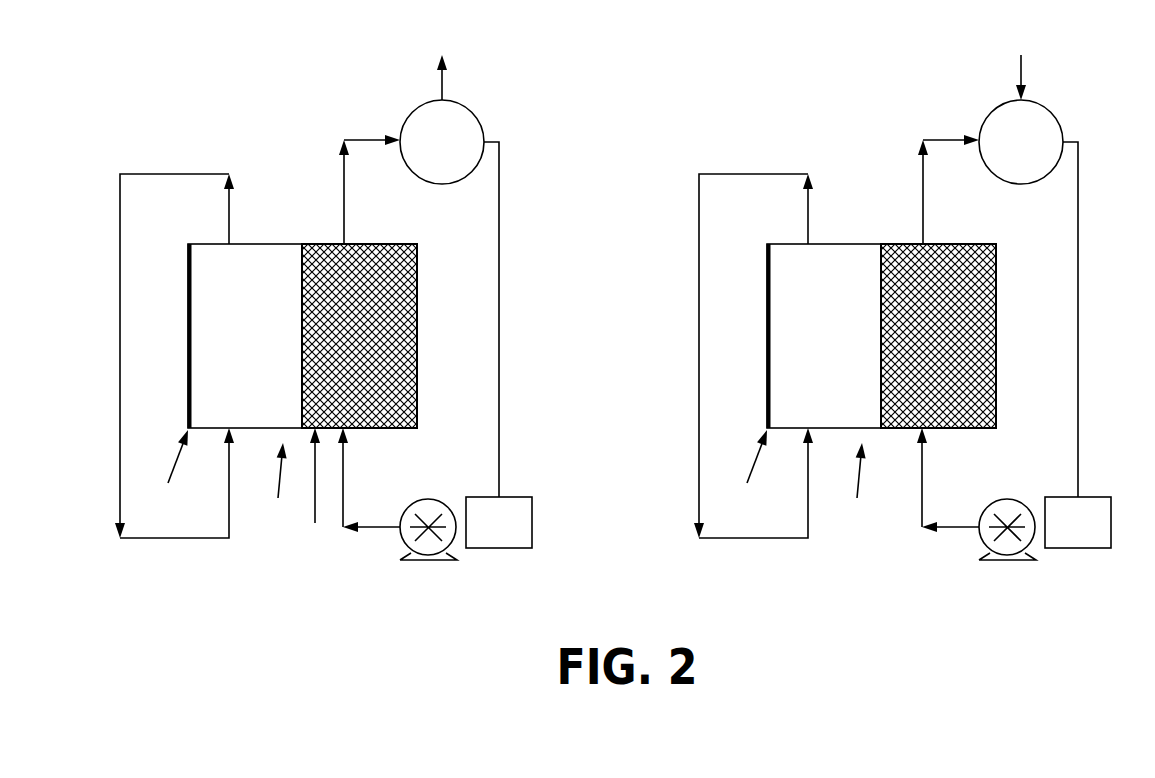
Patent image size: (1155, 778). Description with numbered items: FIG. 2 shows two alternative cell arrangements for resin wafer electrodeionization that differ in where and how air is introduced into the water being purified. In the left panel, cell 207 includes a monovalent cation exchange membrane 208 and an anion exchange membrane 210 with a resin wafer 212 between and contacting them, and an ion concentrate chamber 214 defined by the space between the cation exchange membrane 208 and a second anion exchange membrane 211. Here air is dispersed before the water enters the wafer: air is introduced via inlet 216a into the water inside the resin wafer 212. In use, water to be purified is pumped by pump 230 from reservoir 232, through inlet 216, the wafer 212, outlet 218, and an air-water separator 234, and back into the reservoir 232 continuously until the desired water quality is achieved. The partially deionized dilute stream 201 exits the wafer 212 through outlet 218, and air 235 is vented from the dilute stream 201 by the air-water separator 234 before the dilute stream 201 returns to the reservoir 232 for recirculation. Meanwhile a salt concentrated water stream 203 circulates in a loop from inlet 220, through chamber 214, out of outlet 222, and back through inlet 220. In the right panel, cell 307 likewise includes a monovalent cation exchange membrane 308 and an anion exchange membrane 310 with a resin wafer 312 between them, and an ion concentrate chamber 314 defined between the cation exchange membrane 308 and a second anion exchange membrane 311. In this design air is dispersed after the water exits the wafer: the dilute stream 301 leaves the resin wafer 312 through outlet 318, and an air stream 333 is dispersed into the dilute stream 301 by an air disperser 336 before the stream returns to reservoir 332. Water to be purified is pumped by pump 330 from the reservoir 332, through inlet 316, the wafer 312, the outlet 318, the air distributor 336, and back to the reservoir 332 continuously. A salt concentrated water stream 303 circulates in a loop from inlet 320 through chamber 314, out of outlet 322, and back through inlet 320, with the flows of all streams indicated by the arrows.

The dilute stream 201 is at (499, 373).
The salt concentrated water stream 203 is at (120, 373).
The cell 207 is at (280, 485).
The monovalent cation exchange membrane 208 is at (299, 232).
The anion exchange membrane 210 is at (417, 244).
The second anion exchange membrane 211 is at (168, 467).
The resin wafer 212 is at (380, 429).
The ion concentrate chamber 214 is at (232, 333).
The inlet 216 is at (343, 480).
The air inlet 216a is at (315, 523).
The outlet 218 is at (344, 200).
The inlet 220 is at (229, 500).
The outlet 222 is at (229, 212).
The pump 230 is at (410, 538).
The reservoir 232 is at (501, 535).
The air-water separator 234 is at (472, 131).
The air 235 is at (443, 85).
The dilute stream 301 is at (1102, 319).
The salt concentrated water stream 303 is at (718, 356).
The cell 307 is at (859, 485).
The monovalent cation exchange membrane 308 is at (861, 279).
The anion exchange membrane 310 is at (956, 316).
The second anion exchange membrane 311 is at (747, 467).
The resin wafer 312 is at (958, 446).
The ion concentrate chamber 314 is at (824, 336).
The inlet 316 is at (951, 480).
The outlet 318 is at (948, 189).
The inlet 320 is at (779, 497).
The outlet 322 is at (775, 209).
The pump 330 is at (1000, 554).
The reservoir 332 is at (1079, 546).
The air stream 333 is at (1020, 65).
The air disperser 336 is at (1051, 142).